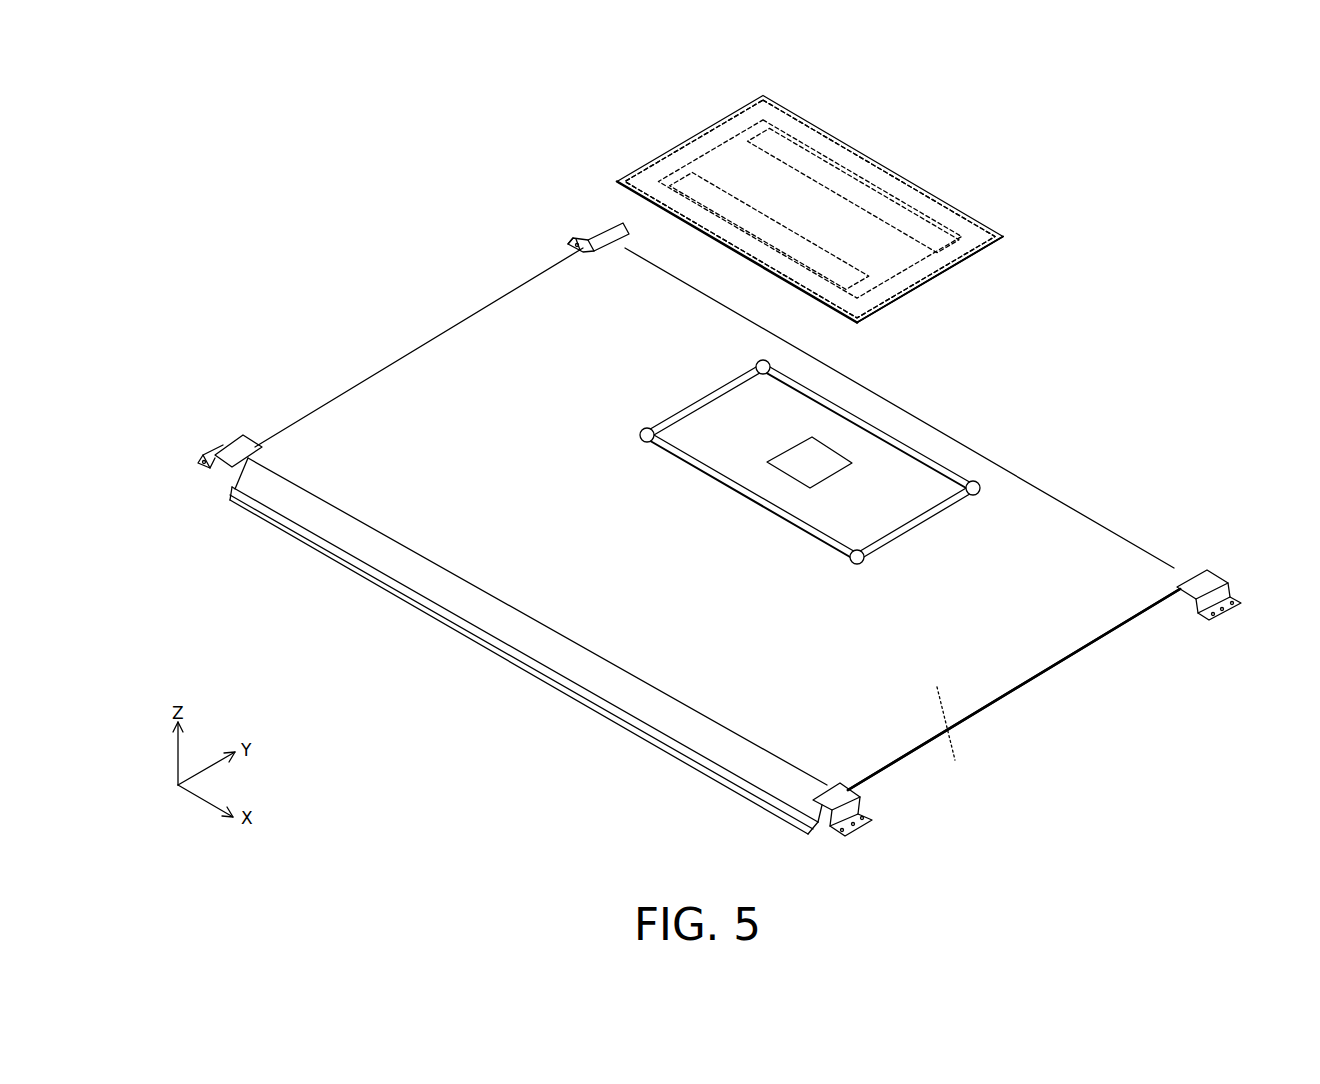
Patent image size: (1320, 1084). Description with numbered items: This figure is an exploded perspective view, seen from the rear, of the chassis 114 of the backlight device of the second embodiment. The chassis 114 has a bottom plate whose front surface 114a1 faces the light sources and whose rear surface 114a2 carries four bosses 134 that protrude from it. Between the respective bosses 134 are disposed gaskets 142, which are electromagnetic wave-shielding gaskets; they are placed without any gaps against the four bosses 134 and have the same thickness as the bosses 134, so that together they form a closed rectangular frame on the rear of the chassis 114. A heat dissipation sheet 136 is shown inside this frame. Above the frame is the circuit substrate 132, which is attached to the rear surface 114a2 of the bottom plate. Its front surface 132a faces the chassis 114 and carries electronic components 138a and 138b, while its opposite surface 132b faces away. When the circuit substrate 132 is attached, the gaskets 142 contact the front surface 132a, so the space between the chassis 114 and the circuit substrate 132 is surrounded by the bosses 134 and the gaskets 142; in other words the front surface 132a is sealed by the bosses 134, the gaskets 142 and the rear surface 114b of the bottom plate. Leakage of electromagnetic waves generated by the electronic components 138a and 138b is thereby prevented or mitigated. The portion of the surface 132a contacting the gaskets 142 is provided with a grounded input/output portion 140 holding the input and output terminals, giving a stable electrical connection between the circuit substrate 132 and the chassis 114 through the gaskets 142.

The chassis 114 is at (1040, 675).
The front surface (of bottom plate) 114a1 is at (962, 738).
The rear surface (of bottom plate) 114a2 is at (1097, 618).
The rear surface (of bottom plate) 114b is at (737, 757).
The circuit substrate 132 is at (680, 143).
The front surface (of circuit substrate) 132a is at (876, 253).
The cover plate surface 132b is at (827, 210).
The boss 134 is at (660, 437).
The heat dissipation sheet 136 is at (817, 457).
The electronic component 138a is at (786, 235).
The electronic component 138b is at (884, 213).
The input/output portion 140 is at (962, 252).
The gasket 142 is at (692, 403).